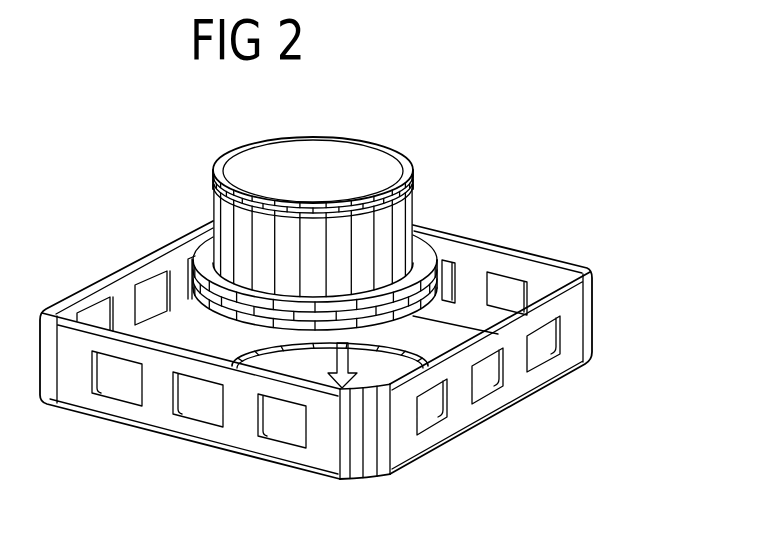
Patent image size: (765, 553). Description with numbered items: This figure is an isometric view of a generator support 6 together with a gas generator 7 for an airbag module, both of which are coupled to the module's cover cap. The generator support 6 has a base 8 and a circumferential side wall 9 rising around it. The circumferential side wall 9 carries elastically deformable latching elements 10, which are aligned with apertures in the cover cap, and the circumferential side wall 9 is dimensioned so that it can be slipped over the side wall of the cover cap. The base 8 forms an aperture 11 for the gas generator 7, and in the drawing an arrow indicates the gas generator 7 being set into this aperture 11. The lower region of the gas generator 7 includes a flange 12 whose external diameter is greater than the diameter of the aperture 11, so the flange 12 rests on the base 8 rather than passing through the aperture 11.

The generator support 6 is at (612, 297).
The gas generator 7 is at (408, 215).
The base 8 is at (417, 330).
The circumferential side wall 9 is at (573, 343).
The elastically deformable latching elements 10 is at (556, 362).
The aperture 11 is at (375, 375).
The flange 12 is at (205, 268).